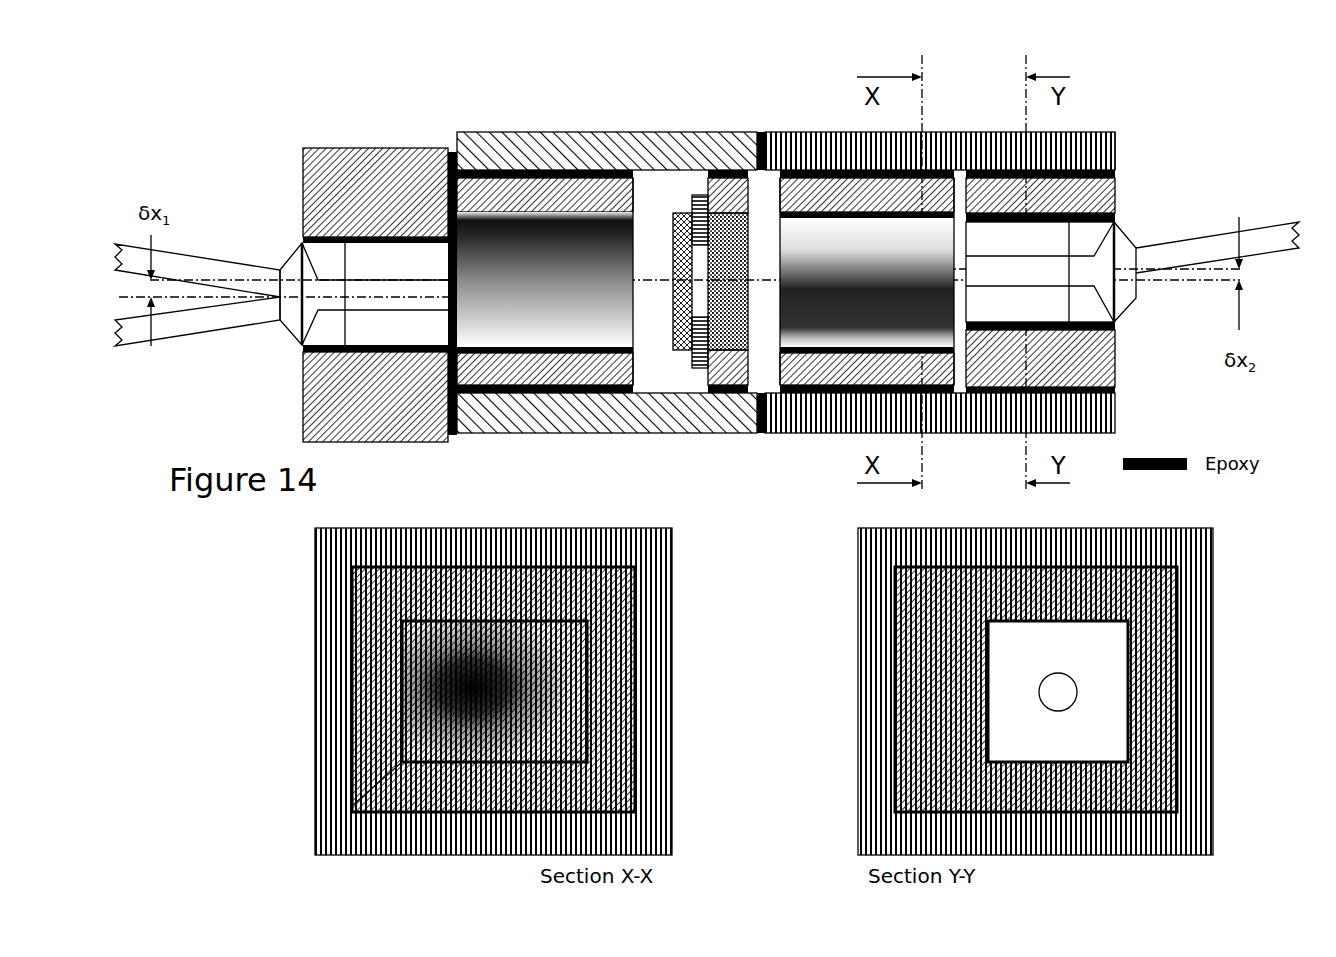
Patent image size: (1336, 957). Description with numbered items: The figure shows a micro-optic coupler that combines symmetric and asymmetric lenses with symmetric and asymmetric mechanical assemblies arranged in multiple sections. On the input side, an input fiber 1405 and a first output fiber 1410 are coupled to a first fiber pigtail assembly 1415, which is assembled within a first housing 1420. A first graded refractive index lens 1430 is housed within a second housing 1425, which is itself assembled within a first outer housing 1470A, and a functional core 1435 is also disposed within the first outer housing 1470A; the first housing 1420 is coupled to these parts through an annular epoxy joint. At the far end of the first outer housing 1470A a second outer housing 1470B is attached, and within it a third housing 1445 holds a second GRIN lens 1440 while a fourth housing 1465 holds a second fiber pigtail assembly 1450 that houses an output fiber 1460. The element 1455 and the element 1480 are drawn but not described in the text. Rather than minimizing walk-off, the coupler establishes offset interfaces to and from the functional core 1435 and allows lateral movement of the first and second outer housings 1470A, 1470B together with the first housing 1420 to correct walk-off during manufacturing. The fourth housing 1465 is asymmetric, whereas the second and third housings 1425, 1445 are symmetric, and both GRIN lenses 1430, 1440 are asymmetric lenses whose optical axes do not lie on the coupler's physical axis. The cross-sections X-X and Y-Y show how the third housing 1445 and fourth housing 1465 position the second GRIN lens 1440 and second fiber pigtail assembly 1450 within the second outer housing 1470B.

The input fiber 1405 is at (190, 278).
The first output fiber 1410 is at (229, 317).
The first fiber pigtail assembly 1415 is at (316, 266).
The first housing 1420 is at (322, 237).
The second housing 1425 is at (633, 273).
The first graded refractive index (GRIN) lens 1430 is at (670, 240).
The functional core 1435 is at (733, 198).
The second GRIN lens 1440 is at (777, 262).
The third housing 1445 is at (805, 365).
The second fiber pigtail assembly 1450 is at (990, 245).
The housing end portion 1455 is at (1096, 125).
The output fiber 1460 is at (1189, 253).
The fourth housing 1465 is at (1118, 200).
The first outer housing 1470A is at (570, 418).
The second outer housing 1470B is at (943, 420).
The optical fiber core 1480 is at (1057, 694).